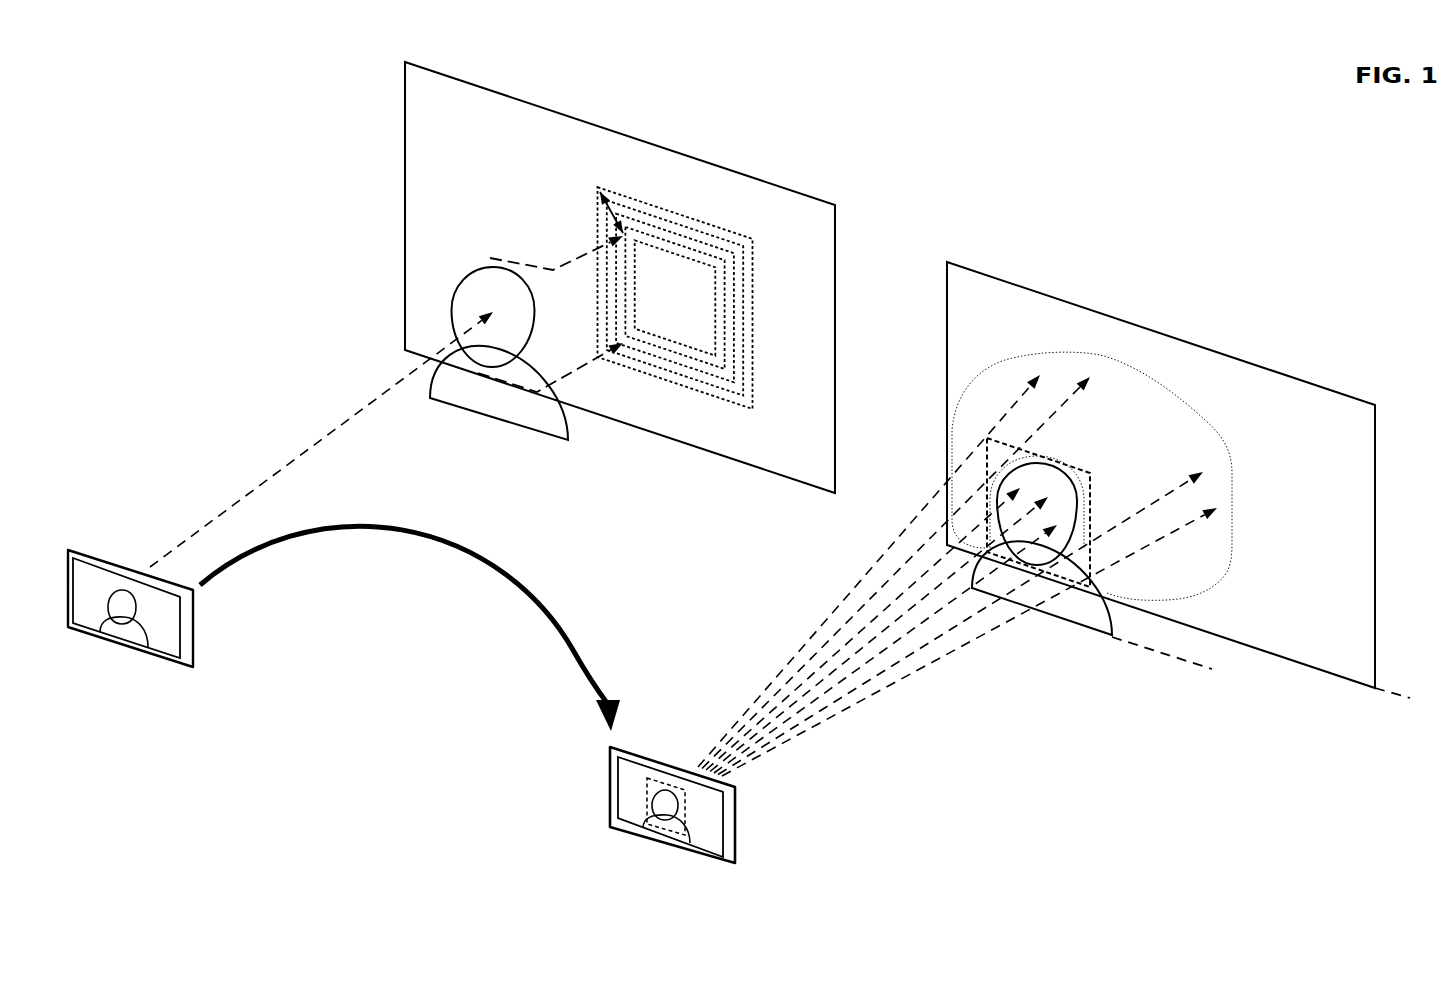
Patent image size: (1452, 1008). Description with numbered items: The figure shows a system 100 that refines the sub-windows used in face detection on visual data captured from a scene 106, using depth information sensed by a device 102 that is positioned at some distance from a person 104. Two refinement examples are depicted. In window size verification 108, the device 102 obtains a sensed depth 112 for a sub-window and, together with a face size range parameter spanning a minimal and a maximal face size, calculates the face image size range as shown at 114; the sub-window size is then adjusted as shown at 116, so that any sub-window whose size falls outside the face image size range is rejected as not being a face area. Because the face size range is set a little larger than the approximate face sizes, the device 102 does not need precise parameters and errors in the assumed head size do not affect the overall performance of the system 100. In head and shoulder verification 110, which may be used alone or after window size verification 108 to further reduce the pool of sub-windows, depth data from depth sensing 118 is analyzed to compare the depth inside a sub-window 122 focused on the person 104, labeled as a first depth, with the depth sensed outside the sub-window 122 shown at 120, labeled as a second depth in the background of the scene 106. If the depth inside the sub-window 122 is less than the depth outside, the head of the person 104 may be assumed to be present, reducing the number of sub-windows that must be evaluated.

The system 100 is at (172, 93).
The device 102 is at (280, 616).
The person 104 is at (597, 481).
The scene 106 is at (348, 122).
The window size verification 108 is at (675, 123).
The head and shoulder verification 110 is at (1215, 308).
The sensed depth 112 is at (308, 443).
The face image size range calculation 114 is at (480, 257).
The sub-window size adjustment 116 is at (805, 231).
The depth sensing 118 is at (814, 616).
The region outside of sub-window 120 is at (1283, 403).
The sub-window 122 is at (1162, 471).